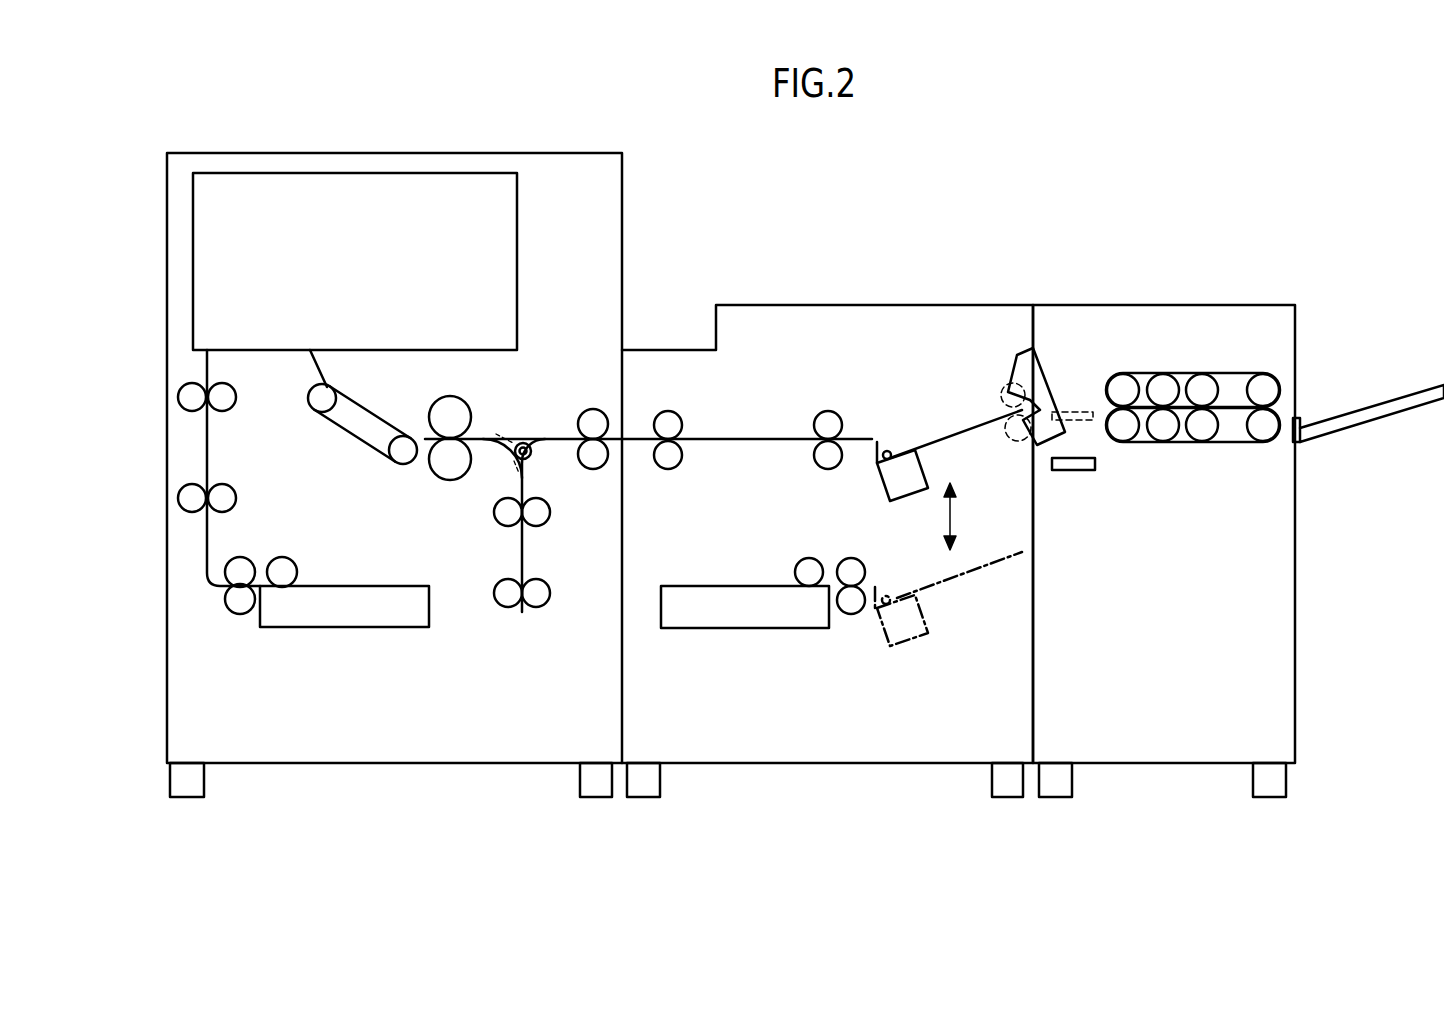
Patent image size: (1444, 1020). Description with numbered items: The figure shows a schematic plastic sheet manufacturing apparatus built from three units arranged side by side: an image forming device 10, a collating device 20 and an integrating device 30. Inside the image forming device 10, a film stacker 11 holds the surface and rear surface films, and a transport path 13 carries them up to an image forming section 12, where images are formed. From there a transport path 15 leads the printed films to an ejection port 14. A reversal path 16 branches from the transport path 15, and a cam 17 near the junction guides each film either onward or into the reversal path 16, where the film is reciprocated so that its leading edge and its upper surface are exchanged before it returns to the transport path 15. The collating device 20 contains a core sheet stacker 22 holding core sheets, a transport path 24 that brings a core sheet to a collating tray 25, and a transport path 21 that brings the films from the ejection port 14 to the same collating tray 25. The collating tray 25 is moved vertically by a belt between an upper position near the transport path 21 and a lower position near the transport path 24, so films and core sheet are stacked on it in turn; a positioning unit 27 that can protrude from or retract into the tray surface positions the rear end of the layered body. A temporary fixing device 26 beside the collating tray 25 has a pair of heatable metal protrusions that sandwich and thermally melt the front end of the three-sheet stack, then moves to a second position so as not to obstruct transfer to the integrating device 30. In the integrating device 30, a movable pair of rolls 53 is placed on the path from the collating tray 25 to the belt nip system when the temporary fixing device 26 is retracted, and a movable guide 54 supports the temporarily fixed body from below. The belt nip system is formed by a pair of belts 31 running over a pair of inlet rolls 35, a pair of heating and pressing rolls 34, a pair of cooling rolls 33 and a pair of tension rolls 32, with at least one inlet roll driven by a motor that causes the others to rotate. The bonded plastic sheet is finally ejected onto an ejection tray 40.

The image forming device 10 is at (338, 152).
The film stacker 11 is at (319, 621).
The image forming section 12 is at (418, 192).
The transport path 13 is at (190, 440).
The ejection port 14 is at (593, 410).
The transport path 15 is at (358, 432).
The reversal path 16 is at (521, 555).
The cam 17 is at (522, 441).
The collating device 20 is at (845, 317).
The transport path 21 is at (743, 439).
The core sheet stacker 22 is at (683, 630).
The transport path 24 is at (830, 585).
The collating tray 25 is at (954, 433).
The temporary fixing device 26 is at (1029, 350).
The positioning unit 27 is at (887, 450).
The integrating device 30 is at (1205, 317).
The belts 31 is at (1228, 442).
The tension rolls 32 is at (1260, 432).
The cooling rolls 33 is at (1197, 432).
The heating and pressing rolls 34 is at (1160, 432).
The inlet rolls 35 is at (1127, 432).
The ejection tray 40 is at (1383, 403).
The pair of rolls 53 is at (1013, 442).
The guide 54 is at (1072, 472).